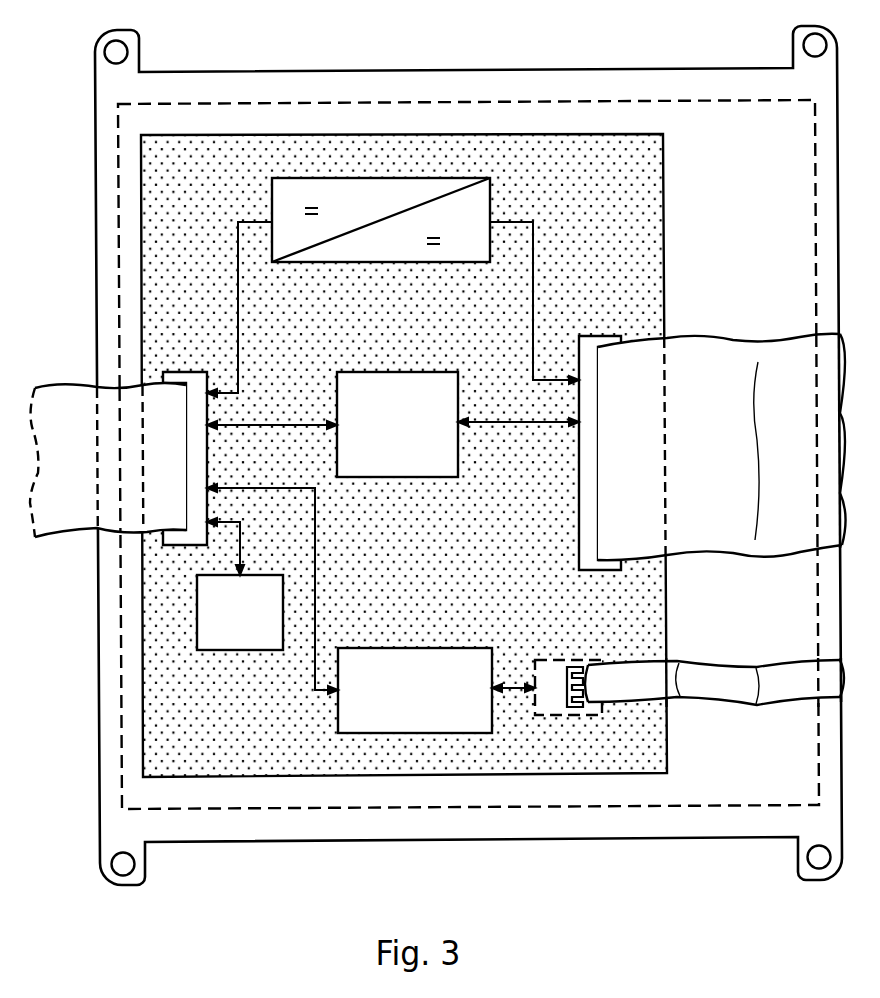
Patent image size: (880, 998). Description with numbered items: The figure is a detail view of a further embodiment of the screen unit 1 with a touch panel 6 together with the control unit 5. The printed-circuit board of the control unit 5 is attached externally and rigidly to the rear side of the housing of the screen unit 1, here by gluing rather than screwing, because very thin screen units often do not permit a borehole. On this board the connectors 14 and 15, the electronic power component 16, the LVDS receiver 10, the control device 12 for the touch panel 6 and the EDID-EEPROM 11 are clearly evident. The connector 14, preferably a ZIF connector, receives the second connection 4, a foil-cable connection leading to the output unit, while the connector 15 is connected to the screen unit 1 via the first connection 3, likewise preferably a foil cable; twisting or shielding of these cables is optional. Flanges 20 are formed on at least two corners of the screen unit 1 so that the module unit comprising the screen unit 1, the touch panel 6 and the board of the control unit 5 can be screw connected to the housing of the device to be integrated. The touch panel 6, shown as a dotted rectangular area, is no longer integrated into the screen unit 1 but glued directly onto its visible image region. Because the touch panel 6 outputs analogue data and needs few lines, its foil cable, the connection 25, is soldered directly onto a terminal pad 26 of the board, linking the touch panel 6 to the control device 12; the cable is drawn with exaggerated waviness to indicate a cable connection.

The screen unit 1 is at (495, 83).
The first connection 3 is at (723, 380).
The second connection 4 is at (77, 410).
The control unit 5 is at (620, 240).
The touch panel 6 is at (428, 101).
The LVDS receiver 10 is at (397, 374).
The EDID-EEPROM 11 is at (250, 637).
The control device for the touch panel 12 is at (414, 668).
The connector 14 is at (200, 392).
The connector 15 is at (592, 350).
The electronic power component 16 is at (328, 247).
The flanges 20 is at (130, 44).
The first connection (touch panel cable connection) 25 is at (717, 685).
The terminal pad 26 is at (556, 680).